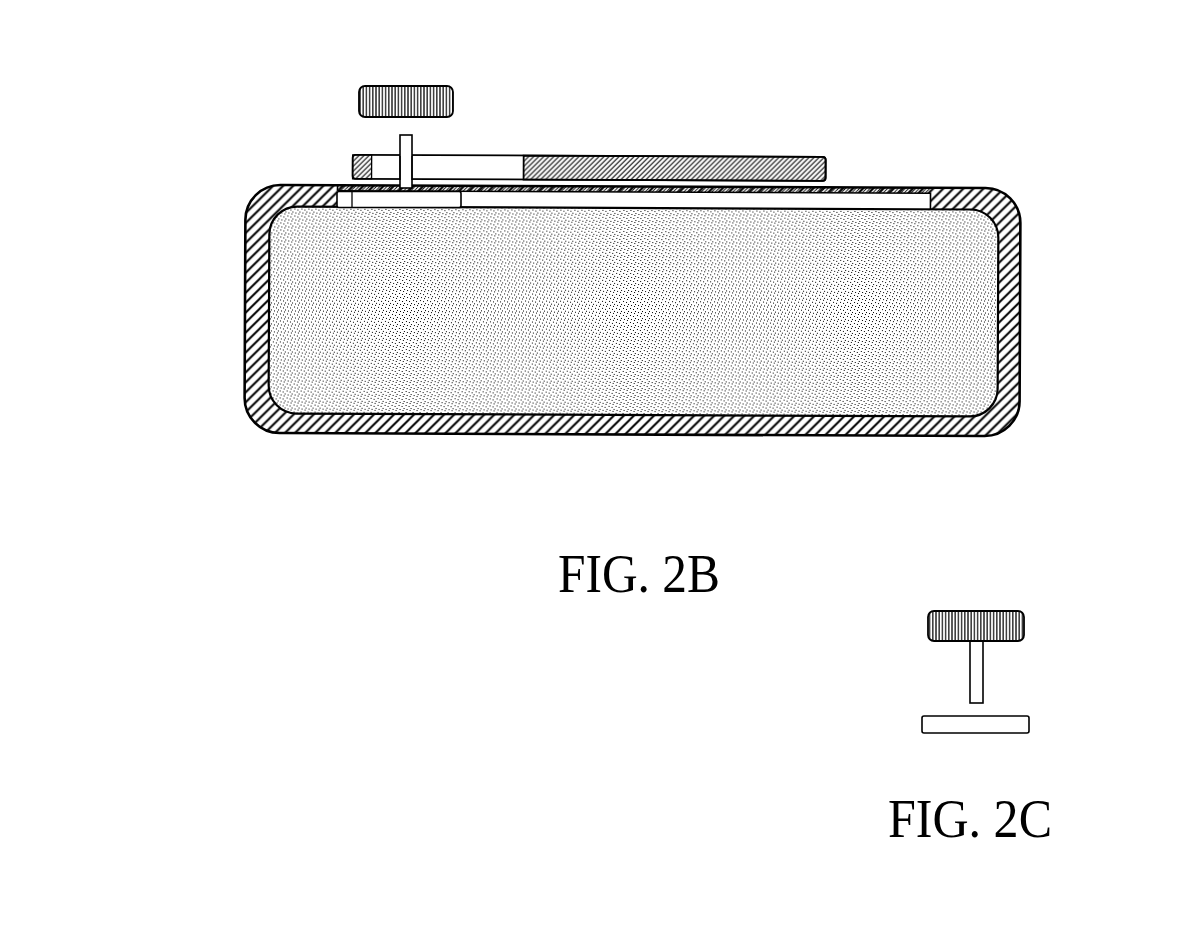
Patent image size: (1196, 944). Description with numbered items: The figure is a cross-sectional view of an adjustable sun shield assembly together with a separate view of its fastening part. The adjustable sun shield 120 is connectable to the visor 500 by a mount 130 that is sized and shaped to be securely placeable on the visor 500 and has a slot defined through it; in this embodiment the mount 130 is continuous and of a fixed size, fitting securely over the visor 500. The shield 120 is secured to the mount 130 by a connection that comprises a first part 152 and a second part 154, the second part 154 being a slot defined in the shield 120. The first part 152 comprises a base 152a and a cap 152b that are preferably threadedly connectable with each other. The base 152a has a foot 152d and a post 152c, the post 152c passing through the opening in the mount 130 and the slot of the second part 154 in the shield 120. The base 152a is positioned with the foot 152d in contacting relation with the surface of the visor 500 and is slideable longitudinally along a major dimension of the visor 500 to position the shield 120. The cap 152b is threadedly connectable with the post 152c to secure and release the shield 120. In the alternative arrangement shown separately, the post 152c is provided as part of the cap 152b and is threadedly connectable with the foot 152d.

In FIG. 2B, the shield 120 is at (793, 158).
In FIG. 2B, the mount 130 is at (997, 196).
In FIG. 2B, the first part 152 is at (349, 121).
In FIG. 2C, the first part 152 is at (1032, 648).
In FIG. 2B, the base 152a is at (396, 146).
In FIG. 2B, the cap 152b is at (410, 85).
In FIG. 2C, the cap 152b is at (980, 610).
In FIG. 2B, the post 152c is at (410, 150).
In FIG. 2C, the post 152c is at (975, 680).
In FIG. 2B, the foot 152d is at (372, 197).
In FIG. 2C, the foot 152d is at (1022, 725).
In FIG. 2B, the second part 154 is at (497, 162).
In FIG. 2B, the visor 500 is at (975, 312).